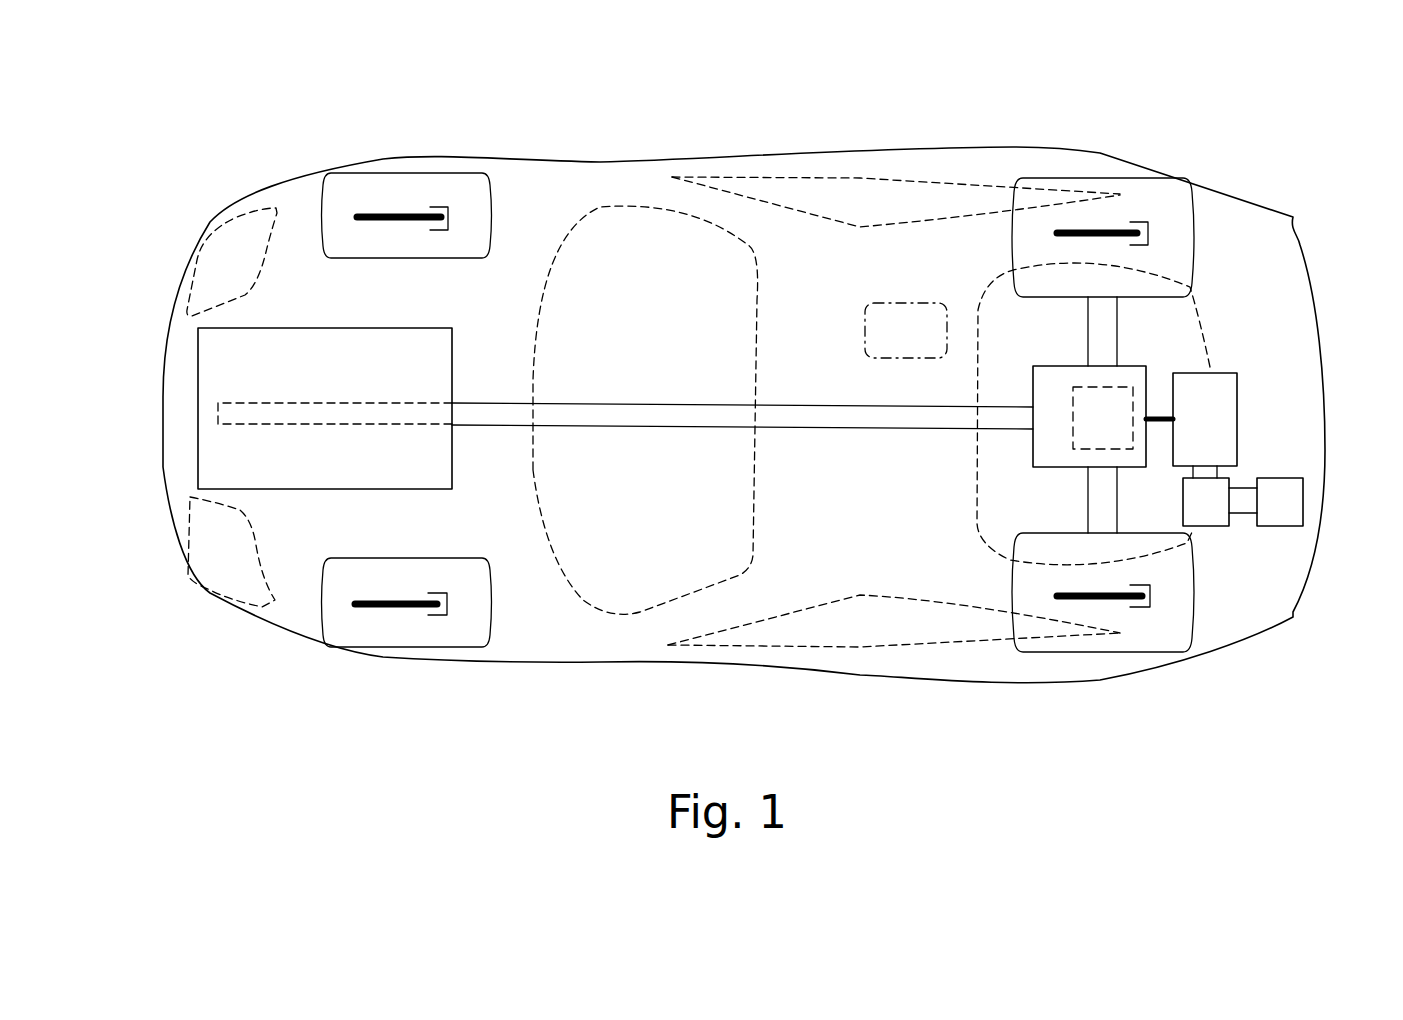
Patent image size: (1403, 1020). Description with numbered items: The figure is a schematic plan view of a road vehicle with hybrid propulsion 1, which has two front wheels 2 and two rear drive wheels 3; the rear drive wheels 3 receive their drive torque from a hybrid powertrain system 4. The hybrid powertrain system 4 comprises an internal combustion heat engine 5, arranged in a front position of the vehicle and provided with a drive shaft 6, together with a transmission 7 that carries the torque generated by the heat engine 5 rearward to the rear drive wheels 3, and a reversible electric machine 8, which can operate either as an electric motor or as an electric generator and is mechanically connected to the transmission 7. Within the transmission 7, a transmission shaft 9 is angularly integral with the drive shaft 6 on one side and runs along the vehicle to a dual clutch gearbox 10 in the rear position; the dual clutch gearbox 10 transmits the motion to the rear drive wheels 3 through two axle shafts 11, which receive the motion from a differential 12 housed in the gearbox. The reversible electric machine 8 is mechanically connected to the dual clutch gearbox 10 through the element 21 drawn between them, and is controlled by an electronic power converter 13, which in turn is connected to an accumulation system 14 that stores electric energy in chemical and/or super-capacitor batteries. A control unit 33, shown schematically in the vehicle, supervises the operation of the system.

The road vehicle with hybrid propulsion 1 is at (1258, 700).
The front wheels 2 is at (345, 190).
The rear drive wheels 3 is at (1180, 197).
The hybrid powertrain system 4 is at (246, 180).
The internal combustion heat engine 5 is at (205, 353).
The drive shaft 6 is at (312, 410).
The transmission 7 is at (775, 140).
The reversible electric machine 8 is at (1205, 425).
The transmission shaft 9 is at (793, 418).
The dual clutch gearbox 10 is at (1045, 453).
The axle shafts 11 is at (1100, 322).
The differential 12 is at (1103, 418).
The electronic power converter 13 is at (1220, 502).
The accumulation system 14 is at (1280, 502).
The coupling 21 is at (1160, 415).
The control unit 33 is at (906, 330).